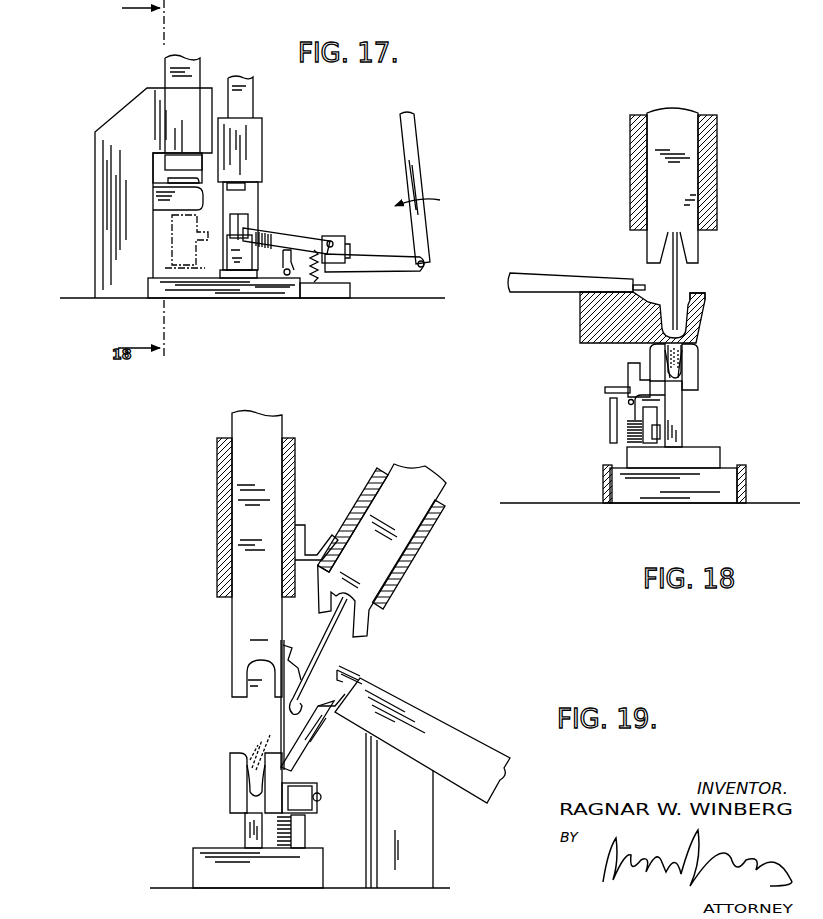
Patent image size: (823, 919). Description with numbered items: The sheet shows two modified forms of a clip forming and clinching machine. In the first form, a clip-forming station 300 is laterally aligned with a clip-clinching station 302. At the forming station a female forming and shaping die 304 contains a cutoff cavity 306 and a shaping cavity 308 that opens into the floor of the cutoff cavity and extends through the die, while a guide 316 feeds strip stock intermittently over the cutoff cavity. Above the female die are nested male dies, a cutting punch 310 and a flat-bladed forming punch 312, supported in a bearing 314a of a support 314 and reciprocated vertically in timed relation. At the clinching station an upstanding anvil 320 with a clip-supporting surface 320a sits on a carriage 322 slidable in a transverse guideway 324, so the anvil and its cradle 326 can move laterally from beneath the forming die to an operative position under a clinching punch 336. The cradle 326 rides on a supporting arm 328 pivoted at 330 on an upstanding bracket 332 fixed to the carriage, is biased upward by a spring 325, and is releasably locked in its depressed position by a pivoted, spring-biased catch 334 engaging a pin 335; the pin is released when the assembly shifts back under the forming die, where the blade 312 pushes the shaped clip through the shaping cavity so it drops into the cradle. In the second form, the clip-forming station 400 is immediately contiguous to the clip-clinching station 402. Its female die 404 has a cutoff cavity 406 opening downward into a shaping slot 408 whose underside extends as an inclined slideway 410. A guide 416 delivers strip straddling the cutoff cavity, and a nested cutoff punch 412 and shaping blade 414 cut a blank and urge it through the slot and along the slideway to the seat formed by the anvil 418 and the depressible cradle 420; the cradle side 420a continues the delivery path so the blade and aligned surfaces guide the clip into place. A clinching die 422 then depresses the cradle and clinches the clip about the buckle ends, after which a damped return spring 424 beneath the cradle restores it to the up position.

In FIG. 17, the clip-forming station 300 is at (249, 182).
In FIG. 18, the clip-forming station 300 is at (661, 305).
In FIG. 17, the clip-clinching station 302 is at (272, 162).
In FIG. 17, the female forming and shaping die 304 is at (178, 195).
In FIG. 18, the female forming and shaping die 304 is at (700, 325).
In FIG. 18, the cutoff cavity 306 is at (694, 296).
In FIG. 18, the shaping cavity 308 is at (690, 343).
In FIG. 17, the male die 310 is at (185, 56).
In FIG. 18, the male die 310 is at (700, 195).
In FIG. 18, the male die 312 is at (678, 262).
In FIG. 17, the support 314 is at (100, 200).
In FIG. 17, the bearing 314a is at (198, 100).
In FIG. 18, the bearing 314a is at (710, 162).
In FIG. 17, the guide 316 is at (168, 180).
In FIG. 18, the guide 316 is at (542, 282).
In FIG. 17, the upstanding anvil 320 is at (232, 258).
In FIG. 18, the upstanding anvil 320 is at (700, 424).
In FIG. 18, the clip-supporting surface 320a is at (685, 395).
In FIG. 17, the carriage 322 is at (348, 290).
In FIG. 18, the carriage 322 is at (740, 487).
In FIG. 17, the transverse guideway 324 is at (190, 299).
In FIG. 18, the transverse guideway 324 is at (746, 468).
In FIG. 17, the spring 325 is at (314, 284).
In FIG. 18, the spring 325 is at (628, 436).
In FIG. 17, the cradle 326 is at (245, 216).
In FIG. 18, the cradle 326 is at (700, 375).
In FIG. 17, the supporting arm 328 is at (290, 222).
In FIG. 18, the supporting arm 328 is at (636, 376).
In FIG. 17, the pivot 330 is at (335, 240).
In FIG. 18, the pivot 330 is at (662, 410).
In FIG. 17, the upstanding bracket 332 is at (348, 258).
In FIG. 18, the upstanding bracket 332 is at (645, 442).
In FIG. 17, the catch 334 is at (287, 264).
In FIG. 18, the catch 334 is at (610, 426).
In FIG. 17, the pin 335 is at (295, 245).
In FIG. 18, the pin 335 is at (605, 390).
In FIG. 17, the clinching punch 336 is at (250, 108).
In FIG. 19, the clip-forming station 400 is at (347, 650).
In FIG. 19, the clip-clinching station 402 is at (257, 798).
In FIG. 19, the female die 404 is at (334, 705).
In FIG. 19, the cutoff cavity 406 is at (297, 660).
In FIG. 19, the shaping cavity 408 is at (305, 700).
In FIG. 19, the slideway 410 is at (300, 740).
In FIG. 19, the cutoff punch 412 is at (370, 620).
In FIG. 19, the shaping blade 414 is at (330, 646).
In FIG. 19, the guide 416 is at (465, 733).
In FIG. 19, the anvil 418 is at (248, 830).
In FIG. 19, the depressible cradle 420 is at (232, 776).
In FIG. 19, the cradle side 420a is at (300, 778).
In FIG. 19, the clinching die 422 is at (238, 642).
In FIG. 19, the damped return spring 424 is at (292, 842).